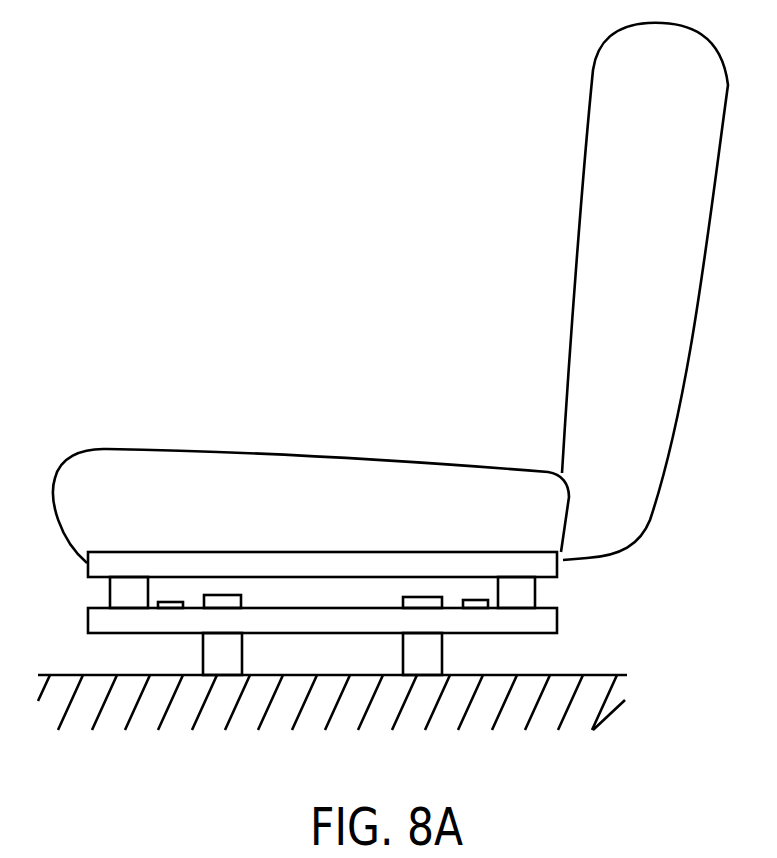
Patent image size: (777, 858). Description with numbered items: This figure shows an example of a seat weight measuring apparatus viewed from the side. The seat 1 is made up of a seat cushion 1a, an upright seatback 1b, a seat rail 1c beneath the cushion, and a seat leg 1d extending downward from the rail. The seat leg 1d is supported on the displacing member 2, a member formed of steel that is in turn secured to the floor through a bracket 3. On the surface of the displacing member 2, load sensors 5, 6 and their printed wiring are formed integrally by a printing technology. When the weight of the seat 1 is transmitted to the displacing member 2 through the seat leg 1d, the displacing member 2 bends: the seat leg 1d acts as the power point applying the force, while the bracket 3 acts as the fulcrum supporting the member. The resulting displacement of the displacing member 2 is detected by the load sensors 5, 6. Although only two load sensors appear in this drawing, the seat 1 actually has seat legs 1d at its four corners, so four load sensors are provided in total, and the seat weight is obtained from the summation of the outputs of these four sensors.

The seat 1 is at (383, 276).
The seat cushion 1a is at (263, 470).
The seatback 1b is at (592, 376).
The seat rail 1c is at (103, 565).
The seat leg 1d is at (128, 598).
The displacing member 2 is at (545, 618).
The bracket 3 is at (222, 647).
The load sensor 5 is at (168, 600).
The load sensor 6 is at (478, 600).